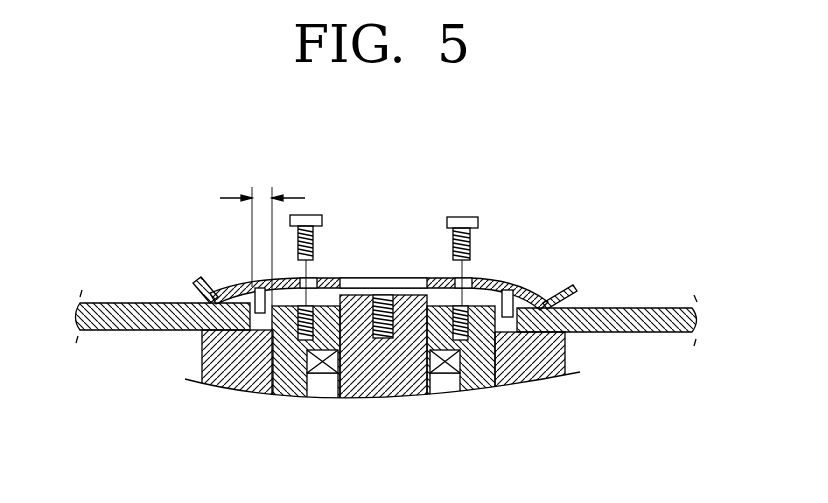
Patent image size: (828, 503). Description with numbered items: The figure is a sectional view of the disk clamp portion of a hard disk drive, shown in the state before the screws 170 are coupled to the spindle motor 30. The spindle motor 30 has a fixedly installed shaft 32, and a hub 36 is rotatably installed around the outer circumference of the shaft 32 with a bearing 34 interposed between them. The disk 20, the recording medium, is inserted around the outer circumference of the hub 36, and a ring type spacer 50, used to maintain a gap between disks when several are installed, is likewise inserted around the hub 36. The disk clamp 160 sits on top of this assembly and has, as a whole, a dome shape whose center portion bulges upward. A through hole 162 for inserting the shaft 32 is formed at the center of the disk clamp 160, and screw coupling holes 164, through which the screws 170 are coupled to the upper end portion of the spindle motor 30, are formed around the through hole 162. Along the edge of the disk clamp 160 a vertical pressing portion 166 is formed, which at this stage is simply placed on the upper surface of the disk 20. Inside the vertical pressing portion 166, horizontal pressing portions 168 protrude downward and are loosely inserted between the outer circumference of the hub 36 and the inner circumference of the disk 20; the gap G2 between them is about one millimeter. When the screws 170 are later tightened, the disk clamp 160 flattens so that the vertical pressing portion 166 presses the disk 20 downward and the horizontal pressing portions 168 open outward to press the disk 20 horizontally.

The disk 20 is at (662, 308).
The spindle motor 30 is at (322, 408).
The shaft 32 is at (400, 397).
The bearing 34 is at (446, 374).
The hub 36 is at (500, 377).
The ring type spacer 50 is at (565, 356).
The disk clamp 160 is at (231, 270).
The through hole 162 is at (362, 280).
The screw coupling holes 164 is at (457, 283).
The vertical pressing portion 166 is at (558, 285).
The horizontal pressing portions 168 is at (512, 290).
The screws 170 is at (457, 217).
The gap G2 is at (262, 231).